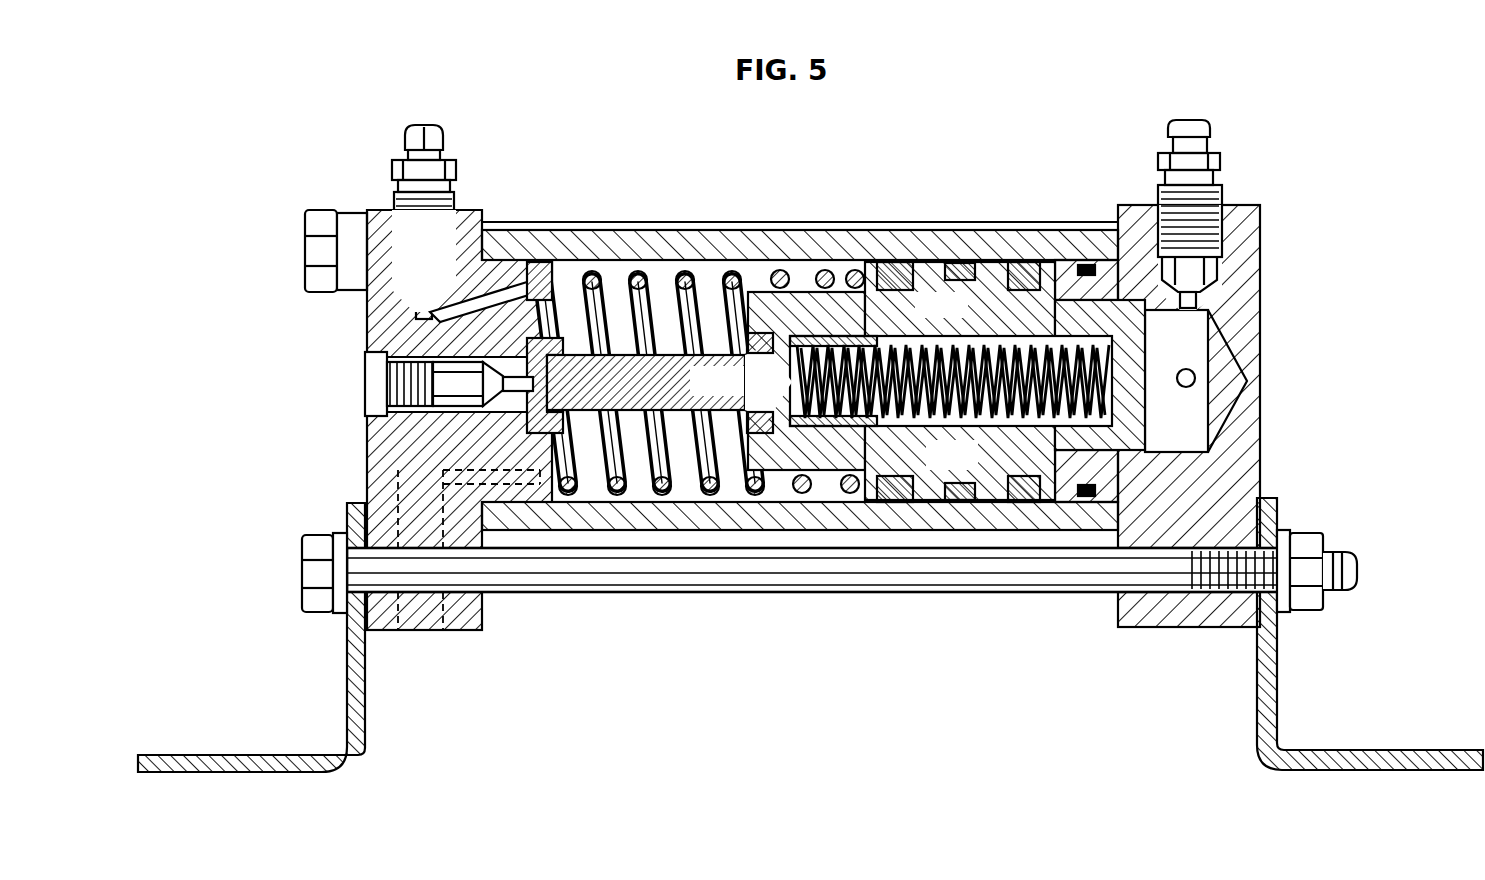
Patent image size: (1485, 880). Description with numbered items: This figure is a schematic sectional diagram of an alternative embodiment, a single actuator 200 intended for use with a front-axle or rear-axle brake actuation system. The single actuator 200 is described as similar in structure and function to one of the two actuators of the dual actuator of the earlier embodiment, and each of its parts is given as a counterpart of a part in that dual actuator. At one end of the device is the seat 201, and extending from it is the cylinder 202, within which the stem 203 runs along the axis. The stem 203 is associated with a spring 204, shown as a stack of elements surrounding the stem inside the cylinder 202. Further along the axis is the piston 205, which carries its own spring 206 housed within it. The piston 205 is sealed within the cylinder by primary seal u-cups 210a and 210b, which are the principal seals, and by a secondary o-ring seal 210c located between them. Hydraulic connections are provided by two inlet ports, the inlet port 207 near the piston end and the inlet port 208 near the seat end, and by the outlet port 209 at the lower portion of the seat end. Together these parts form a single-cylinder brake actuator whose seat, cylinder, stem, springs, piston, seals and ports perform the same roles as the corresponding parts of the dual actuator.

The single actuator 200 is at (522, 108).
The seat 201 is at (528, 374).
The cylinder 202 is at (681, 486).
The stem 203 is at (740, 394).
The spring 204 is at (560, 488).
The piston 205 is at (976, 468).
The spring 206 is at (942, 366).
The inlet port 207 is at (1185, 369).
The inlet port 208 is at (368, 381).
The outlet port 209 is at (430, 628).
The primary seal u-cup 210a is at (893, 258).
The primary seal u-cup 210b is at (1013, 258).
The secondary o-ring seal 210c is at (960, 258).